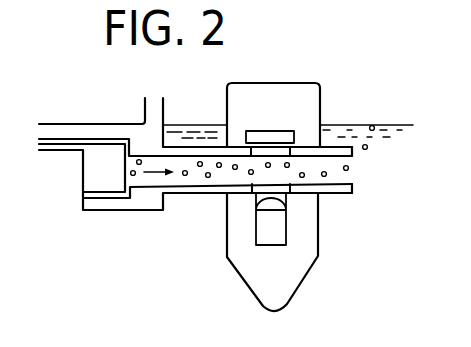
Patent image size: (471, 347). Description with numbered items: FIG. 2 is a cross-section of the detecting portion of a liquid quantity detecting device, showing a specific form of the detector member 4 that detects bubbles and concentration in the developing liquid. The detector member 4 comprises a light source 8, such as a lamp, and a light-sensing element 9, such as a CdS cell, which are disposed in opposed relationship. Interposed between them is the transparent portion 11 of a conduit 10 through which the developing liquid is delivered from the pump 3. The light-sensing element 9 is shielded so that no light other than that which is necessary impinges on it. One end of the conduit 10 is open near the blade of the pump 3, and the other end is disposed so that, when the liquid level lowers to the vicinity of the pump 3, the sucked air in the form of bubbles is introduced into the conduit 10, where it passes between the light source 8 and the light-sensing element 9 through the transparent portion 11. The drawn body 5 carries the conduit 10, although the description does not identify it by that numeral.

The pump 3 is at (82, 170).
The detector member 4 is at (308, 83).
The conduit body 5 is at (138, 260).
The light source 8 is at (268, 245).
The light-sensing element 9 is at (273, 131).
The conduit 10 is at (225, 198).
The transparent portion 11 is at (300, 143).